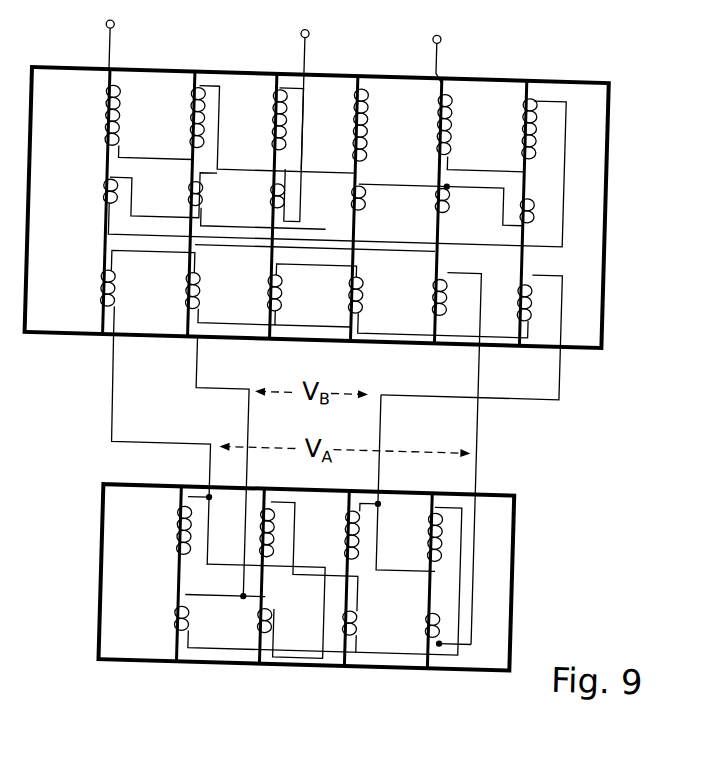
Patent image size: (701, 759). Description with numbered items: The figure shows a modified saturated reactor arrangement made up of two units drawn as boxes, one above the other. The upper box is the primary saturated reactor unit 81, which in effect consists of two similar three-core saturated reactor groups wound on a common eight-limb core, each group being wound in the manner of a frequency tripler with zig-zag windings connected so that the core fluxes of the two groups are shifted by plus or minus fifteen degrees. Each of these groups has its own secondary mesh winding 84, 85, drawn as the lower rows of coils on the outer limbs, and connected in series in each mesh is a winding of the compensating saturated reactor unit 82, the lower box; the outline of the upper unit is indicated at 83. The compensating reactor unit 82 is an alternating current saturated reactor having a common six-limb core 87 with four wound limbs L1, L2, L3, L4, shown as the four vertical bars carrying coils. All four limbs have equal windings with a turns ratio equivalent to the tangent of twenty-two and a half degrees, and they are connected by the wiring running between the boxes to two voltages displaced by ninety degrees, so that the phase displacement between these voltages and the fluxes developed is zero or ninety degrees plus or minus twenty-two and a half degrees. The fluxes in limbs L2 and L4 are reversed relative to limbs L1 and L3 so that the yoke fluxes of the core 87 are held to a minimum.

The primary saturated reactor unit 81 is at (332, 333).
The compensating saturated reactor unit 82 is at (323, 599).
The housing of first winding section 83 is at (610, 335).
The secondary mesh winding 84 is at (96, 287).
The secondary mesh winding 85 is at (541, 303).
The common six-limb core 87 is at (134, 658).
The wound limb L1 is at (186, 591).
The wound limb L2 is at (265, 593).
The wound limb L3 is at (350, 596).
The wound limb L4 is at (434, 598).